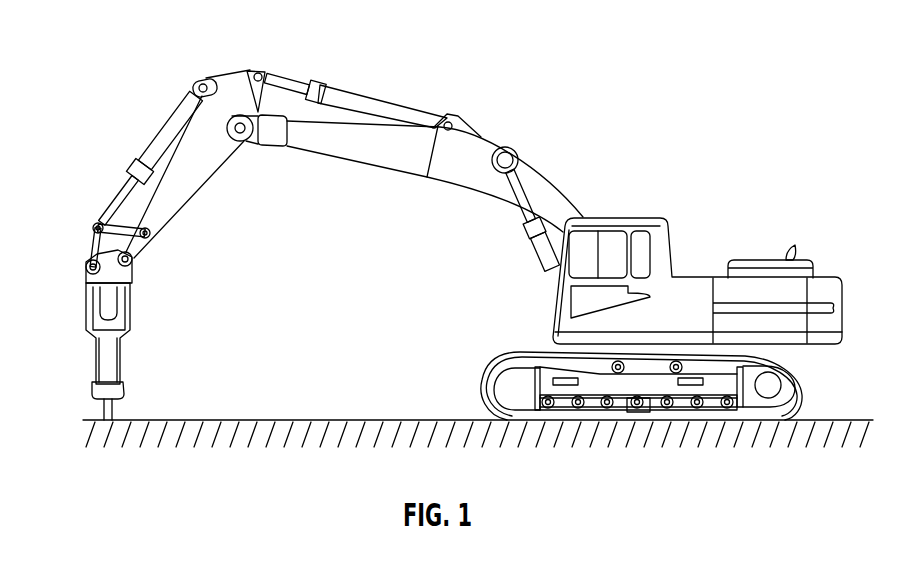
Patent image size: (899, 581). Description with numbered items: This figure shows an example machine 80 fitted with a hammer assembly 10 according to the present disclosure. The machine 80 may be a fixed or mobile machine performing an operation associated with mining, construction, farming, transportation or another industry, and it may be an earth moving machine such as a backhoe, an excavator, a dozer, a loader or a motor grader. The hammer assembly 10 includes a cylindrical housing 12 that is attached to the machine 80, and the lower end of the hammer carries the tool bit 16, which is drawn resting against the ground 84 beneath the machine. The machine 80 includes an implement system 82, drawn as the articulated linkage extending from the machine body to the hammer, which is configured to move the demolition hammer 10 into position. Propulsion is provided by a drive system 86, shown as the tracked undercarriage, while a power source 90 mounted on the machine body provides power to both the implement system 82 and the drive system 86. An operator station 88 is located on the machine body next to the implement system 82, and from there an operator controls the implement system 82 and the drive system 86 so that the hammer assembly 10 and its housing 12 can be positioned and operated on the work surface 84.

The hammer assembly 10 is at (107, 335).
The cylindrical housing 12 is at (123, 338).
The tool bit 16 is at (115, 410).
The machine 80 is at (631, 283).
The implement system 82 is at (602, 61).
The work surface 84 is at (242, 420).
The drive system 86 is at (482, 373).
The operator station 88 is at (607, 243).
The power source 90 is at (757, 260).